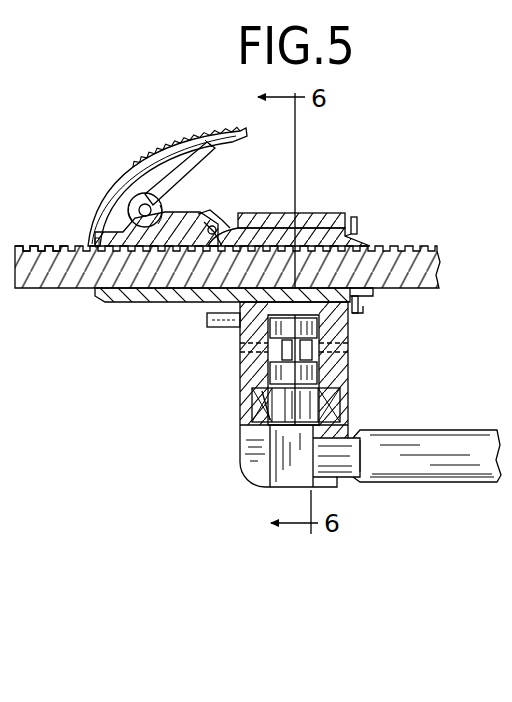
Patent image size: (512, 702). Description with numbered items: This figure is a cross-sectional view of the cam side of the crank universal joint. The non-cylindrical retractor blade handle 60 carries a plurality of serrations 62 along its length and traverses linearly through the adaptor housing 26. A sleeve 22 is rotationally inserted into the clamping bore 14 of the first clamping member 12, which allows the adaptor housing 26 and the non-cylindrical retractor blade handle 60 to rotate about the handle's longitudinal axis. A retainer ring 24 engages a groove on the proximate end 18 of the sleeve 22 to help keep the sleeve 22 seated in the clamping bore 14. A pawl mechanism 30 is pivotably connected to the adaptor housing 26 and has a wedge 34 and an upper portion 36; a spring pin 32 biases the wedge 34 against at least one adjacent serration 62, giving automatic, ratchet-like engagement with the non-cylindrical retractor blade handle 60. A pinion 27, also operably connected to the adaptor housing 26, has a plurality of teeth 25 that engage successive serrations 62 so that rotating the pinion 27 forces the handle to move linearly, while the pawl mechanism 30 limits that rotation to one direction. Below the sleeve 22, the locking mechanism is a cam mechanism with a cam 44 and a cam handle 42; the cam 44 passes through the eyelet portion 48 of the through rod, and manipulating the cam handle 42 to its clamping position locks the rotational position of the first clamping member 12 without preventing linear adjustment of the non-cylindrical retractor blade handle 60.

The first clamping member 12 is at (332, 209).
The clamping bore 14 is at (336, 222).
The proximate end 18 is at (360, 300).
The sleeve 22 is at (270, 226).
The retainer ring 24 is at (362, 314).
The teeth 25 is at (214, 216).
The adaptor housing 26 is at (130, 304).
The pinion 27 is at (191, 240).
The pawl mechanism 30 is at (167, 165).
The spring pin 32 is at (186, 166).
The wedge 34 is at (82, 243).
The upper portion 36 is at (209, 126).
The cam handle 42 is at (381, 490).
The cam 44 is at (312, 408).
The eyelet portion 48 is at (258, 410).
The non-cylindrical retractor blade handle 60 is at (42, 293).
The serrations 62 is at (26, 244).